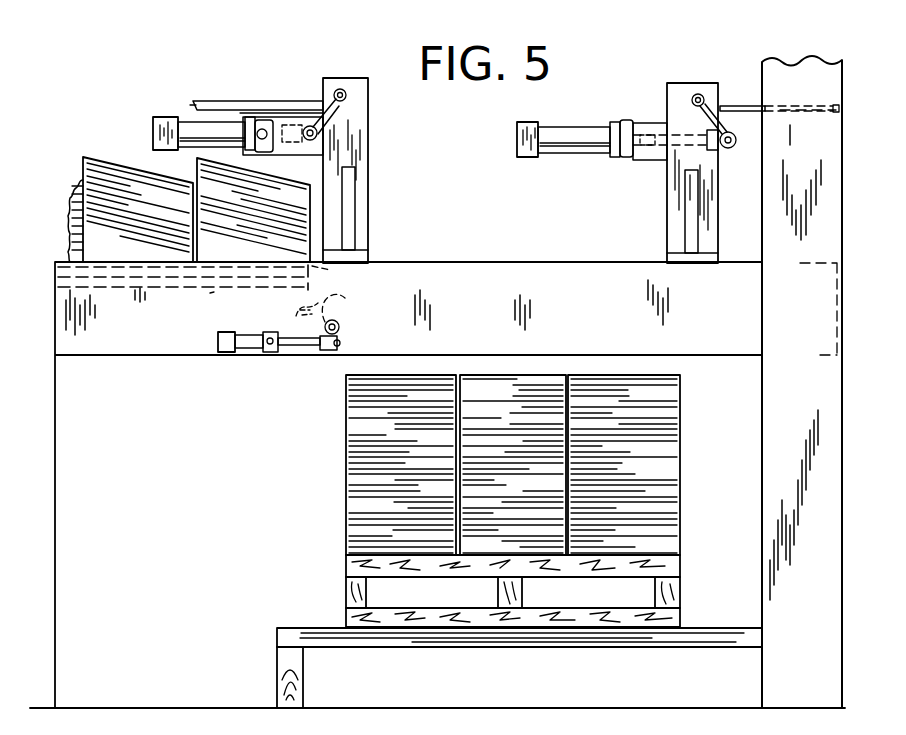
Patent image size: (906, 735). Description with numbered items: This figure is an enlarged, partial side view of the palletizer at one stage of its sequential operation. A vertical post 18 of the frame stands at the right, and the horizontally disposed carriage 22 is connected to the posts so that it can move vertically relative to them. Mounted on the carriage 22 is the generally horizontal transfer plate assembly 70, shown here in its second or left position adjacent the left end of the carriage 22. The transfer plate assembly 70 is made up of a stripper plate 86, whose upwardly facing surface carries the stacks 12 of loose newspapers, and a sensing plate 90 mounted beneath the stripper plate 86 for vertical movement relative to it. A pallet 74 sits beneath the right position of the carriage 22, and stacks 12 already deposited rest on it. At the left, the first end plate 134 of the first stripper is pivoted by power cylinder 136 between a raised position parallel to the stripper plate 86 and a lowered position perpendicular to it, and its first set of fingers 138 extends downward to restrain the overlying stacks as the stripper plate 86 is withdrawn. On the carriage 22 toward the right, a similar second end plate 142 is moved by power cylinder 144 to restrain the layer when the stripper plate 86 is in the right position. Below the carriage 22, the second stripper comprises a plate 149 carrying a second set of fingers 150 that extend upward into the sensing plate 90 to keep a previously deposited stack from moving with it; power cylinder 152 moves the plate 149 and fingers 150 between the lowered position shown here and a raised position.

The stacks 12 is at (297, 212).
The posts 18 is at (782, 70).
The carriage 22 is at (600, 262).
The transfer plate assembly 70 is at (212, 293).
The pallet 74 is at (346, 564).
The stripper plate 86 is at (330, 270).
The sensing plate 90 is at (152, 283).
The first end plate 134 is at (287, 100).
The power cylinder 136 is at (193, 124).
The first set of fingers 138 is at (193, 101).
The second end plate 142 is at (782, 116).
The power cylinder 144 is at (556, 104).
The plate 149 is at (326, 298).
The second set of fingers 150 is at (293, 316).
The power cylinder 152 is at (248, 347).